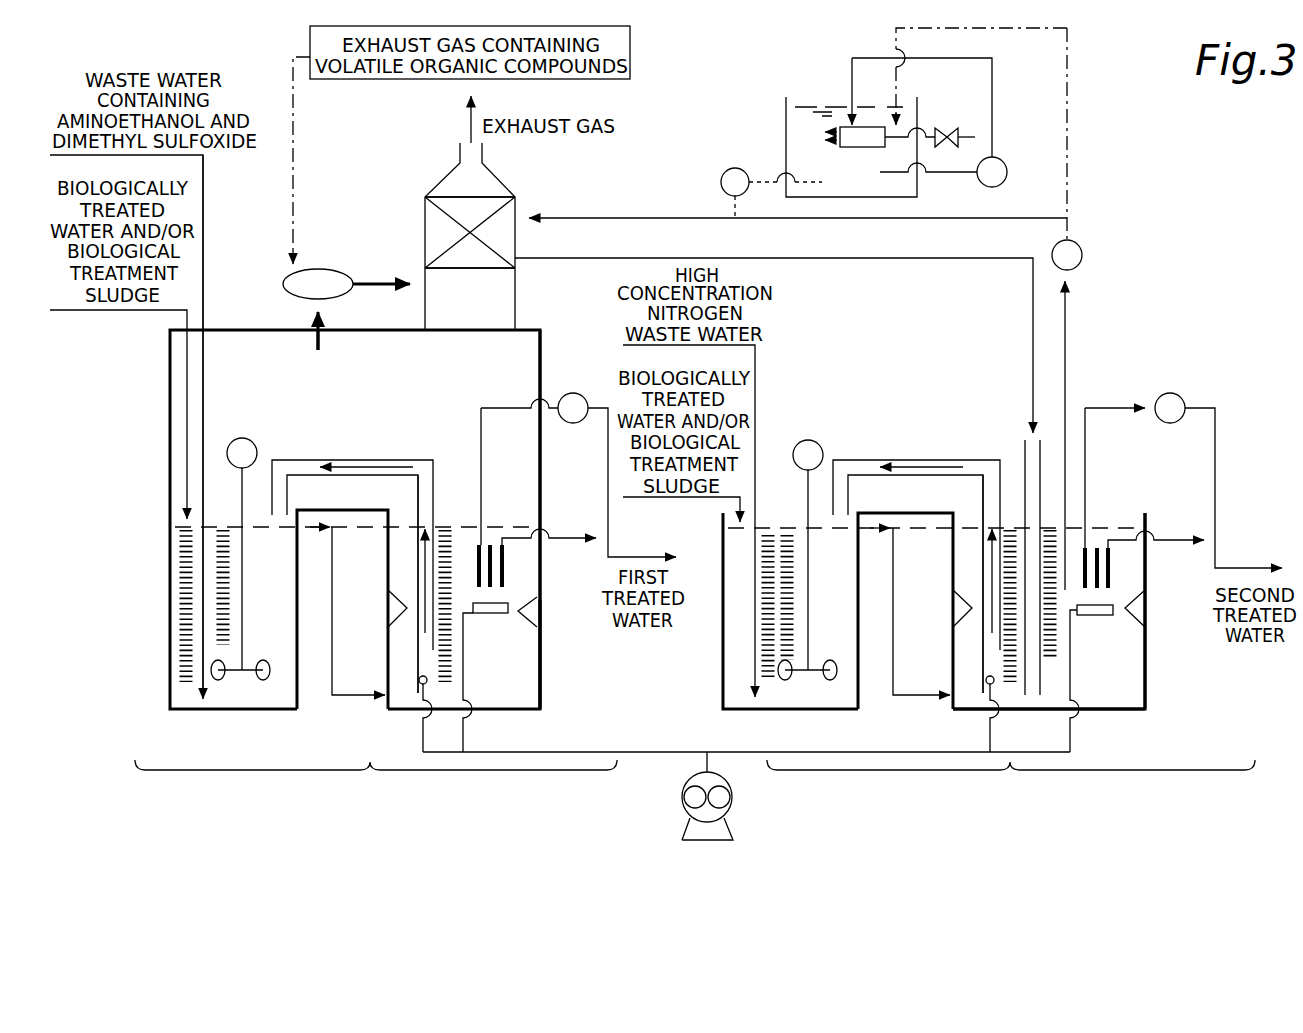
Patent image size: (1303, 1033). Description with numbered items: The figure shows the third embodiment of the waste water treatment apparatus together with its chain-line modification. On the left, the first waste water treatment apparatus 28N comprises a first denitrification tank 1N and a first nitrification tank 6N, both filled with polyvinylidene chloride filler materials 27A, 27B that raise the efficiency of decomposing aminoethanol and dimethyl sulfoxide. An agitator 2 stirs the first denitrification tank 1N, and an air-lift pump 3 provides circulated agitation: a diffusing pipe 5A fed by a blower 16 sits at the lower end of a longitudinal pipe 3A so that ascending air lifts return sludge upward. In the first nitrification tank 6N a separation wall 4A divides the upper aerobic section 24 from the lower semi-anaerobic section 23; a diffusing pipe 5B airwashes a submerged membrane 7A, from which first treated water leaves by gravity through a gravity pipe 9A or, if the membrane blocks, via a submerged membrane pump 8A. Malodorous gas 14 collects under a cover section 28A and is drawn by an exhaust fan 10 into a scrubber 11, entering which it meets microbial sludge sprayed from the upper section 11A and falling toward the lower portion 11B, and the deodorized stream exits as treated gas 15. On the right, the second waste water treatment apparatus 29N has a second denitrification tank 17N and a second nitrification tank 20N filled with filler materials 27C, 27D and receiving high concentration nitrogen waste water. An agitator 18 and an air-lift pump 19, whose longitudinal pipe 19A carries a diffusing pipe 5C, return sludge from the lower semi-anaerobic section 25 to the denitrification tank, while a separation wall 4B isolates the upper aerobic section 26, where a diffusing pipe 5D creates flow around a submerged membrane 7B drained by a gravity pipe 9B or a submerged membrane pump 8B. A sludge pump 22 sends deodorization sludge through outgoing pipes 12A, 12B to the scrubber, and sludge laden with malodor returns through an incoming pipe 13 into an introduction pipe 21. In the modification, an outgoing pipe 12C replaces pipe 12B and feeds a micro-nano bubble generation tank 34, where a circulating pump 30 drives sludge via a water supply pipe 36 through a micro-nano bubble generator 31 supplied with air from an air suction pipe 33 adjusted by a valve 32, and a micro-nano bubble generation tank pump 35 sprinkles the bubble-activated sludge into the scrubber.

The first denitrification tank 1N is at (167, 652).
The agitator 2 is at (242, 438).
The air-lift pump 3 is at (343, 458).
The longitudinal pipe 3A is at (416, 553).
The separation wall 4A is at (387, 608).
The separation wall 4B is at (952, 609).
The diffusing pipe 5A is at (419, 683).
The diffusing pipe 5B is at (484, 615).
The diffusing pipe 5C is at (986, 684).
The diffusing pipe 5D is at (1093, 616).
The first nitrification tank 6N is at (543, 660).
The submerged membrane 7A is at (506, 572).
The submerged membrane 7B is at (1112, 572).
The submerged membrane pump 8A is at (574, 424).
The submerged membrane pump 8B is at (1170, 393).
The gravity pipe 9A is at (572, 537).
The gravity pipe 9B is at (1178, 539).
The exhaust fan 10 is at (318, 268).
The scrubber 11 is at (443, 174).
The upper section of scrubber 11A is at (520, 196).
The lower portion of scrubber 11B is at (520, 263).
The outgoing pipe for deodorization sludge 12A is at (640, 217).
The outgoing pipe for deodorization sludge 12B is at (893, 220).
The outgoing pipe for deodorization sludge 12C is at (1068, 110).
The incoming pipe for deodorization sludge 13 is at (838, 260).
The malodorous gas 14 is at (320, 340).
The treated gas 15 is at (462, 118).
The blower 16 is at (733, 797).
The second denitrification tank 17N is at (718, 681).
The agitator 18 is at (808, 440).
The air-lift pump 19 is at (910, 458).
The longitudinal pipe 19A is at (981, 557).
The second nitrification tank 20N is at (1125, 712).
The introduction pipe 21 is at (1023, 462).
The sludge pump 22 is at (1078, 243).
The lower semi-anaerobic section 23 is at (542, 698).
The upper aerobic section 24 is at (490, 540).
The lower semi-anaerobic section 25 is at (1147, 698).
The upper aerobic section 26 is at (1095, 540).
The polyvinylidene chloride filler material 27A is at (183, 585).
The polyvinylidene chloride filler material 27B is at (446, 527).
The polyvinylidene chloride filler material 27C is at (766, 545).
The polyvinylidene chloride filler material 27D is at (1005, 652).
The cover section 28A is at (226, 328).
The first waste water treatment apparatus 28N is at (376, 785).
The second waste water treatment apparatus 29N is at (1011, 785).
The circulating pump 30 is at (1007, 172).
The micro-nano bubble generator 31 is at (862, 148).
The valve 32 is at (955, 118).
The air suction pipe 33 is at (960, 137).
The micro-nano bubble generation tank 34 is at (781, 108).
The micro-nano bubble generation tank pump 35 is at (738, 167).
The water supply pipe 36 is at (992, 75).